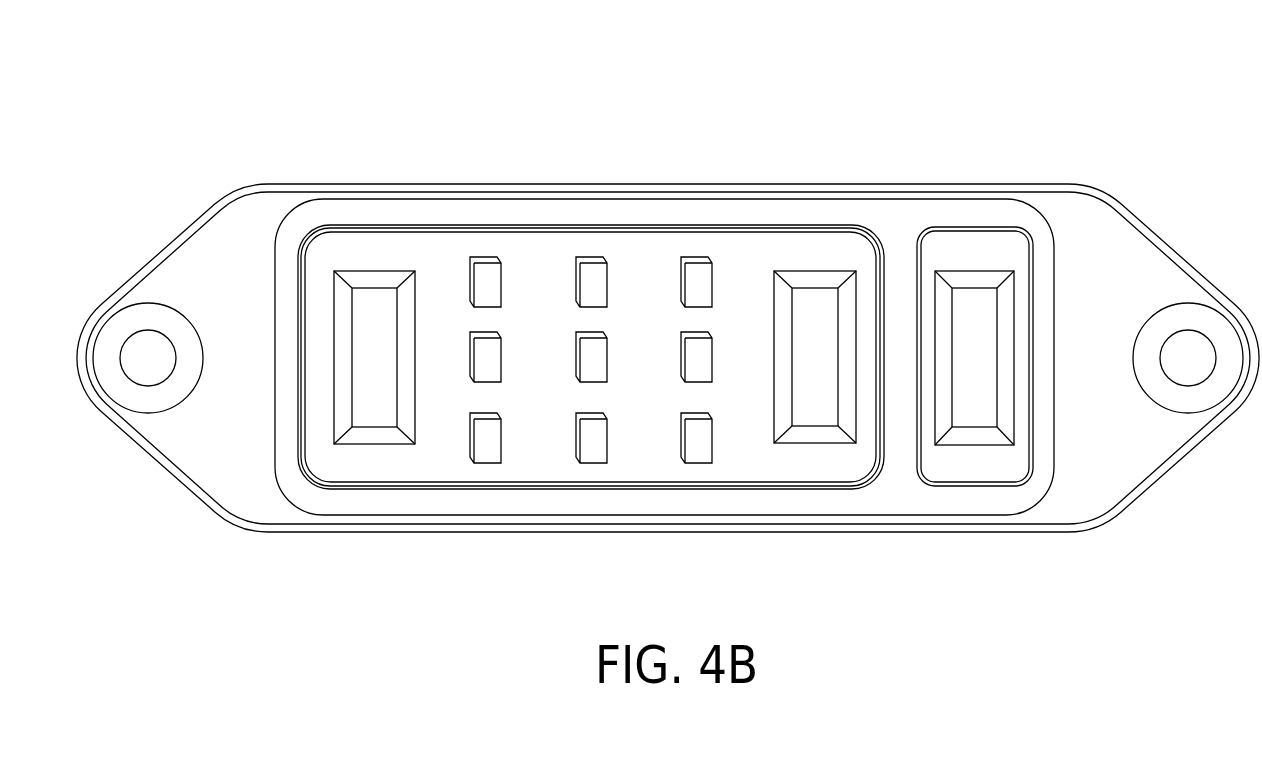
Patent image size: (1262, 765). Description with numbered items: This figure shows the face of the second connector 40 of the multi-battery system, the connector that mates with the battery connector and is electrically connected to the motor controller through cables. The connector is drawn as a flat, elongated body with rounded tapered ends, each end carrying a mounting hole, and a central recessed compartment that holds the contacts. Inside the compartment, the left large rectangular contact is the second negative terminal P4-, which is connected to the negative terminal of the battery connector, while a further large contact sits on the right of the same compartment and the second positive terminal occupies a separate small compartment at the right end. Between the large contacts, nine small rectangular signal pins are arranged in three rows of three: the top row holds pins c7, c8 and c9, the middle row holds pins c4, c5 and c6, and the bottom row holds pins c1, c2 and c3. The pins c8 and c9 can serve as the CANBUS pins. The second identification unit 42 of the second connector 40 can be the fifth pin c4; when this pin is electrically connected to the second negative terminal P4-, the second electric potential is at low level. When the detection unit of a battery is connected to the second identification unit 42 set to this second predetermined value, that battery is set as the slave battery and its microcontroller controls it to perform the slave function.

The second connector 40 is at (1090, 66).
The second identification unit 42 is at (482, 355).
The second negative terminal P4- is at (368, 308).
The pin c1 is at (503, 438).
The pin c2 is at (609, 438).
The pin c3 is at (714, 438).
The fifth pin c4 is at (503, 357).
The pin c5 is at (609, 357).
The pin c6 is at (714, 357).
The pin c7 is at (503, 282).
The CANBUS pin c8 is at (609, 282).
The CANBUS pin c9 is at (714, 282).